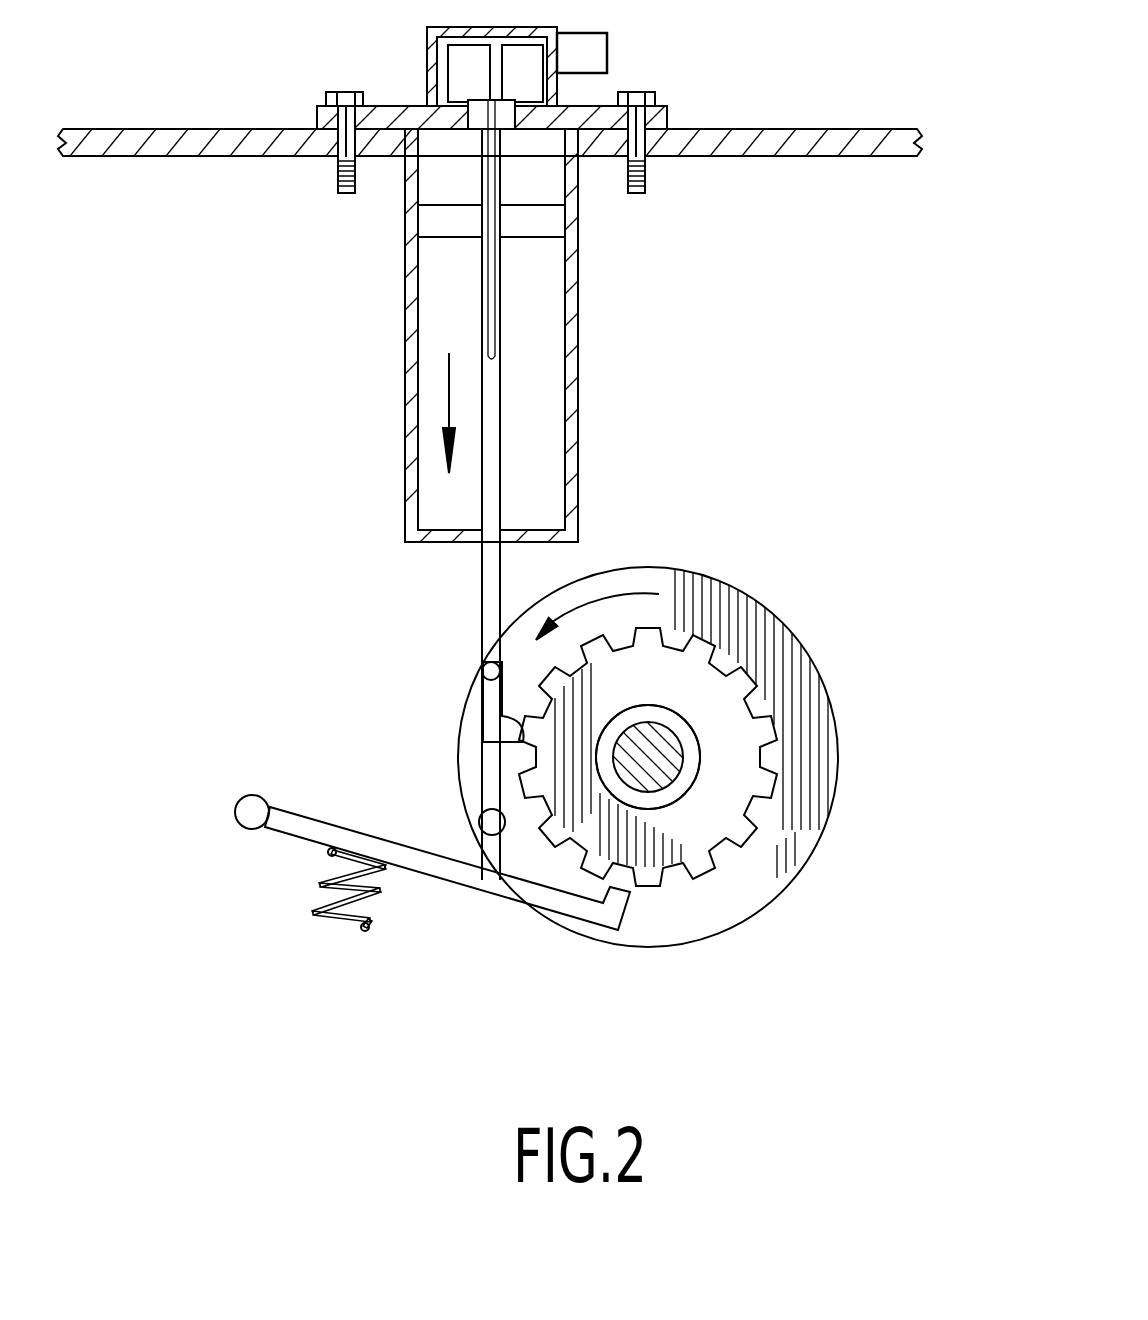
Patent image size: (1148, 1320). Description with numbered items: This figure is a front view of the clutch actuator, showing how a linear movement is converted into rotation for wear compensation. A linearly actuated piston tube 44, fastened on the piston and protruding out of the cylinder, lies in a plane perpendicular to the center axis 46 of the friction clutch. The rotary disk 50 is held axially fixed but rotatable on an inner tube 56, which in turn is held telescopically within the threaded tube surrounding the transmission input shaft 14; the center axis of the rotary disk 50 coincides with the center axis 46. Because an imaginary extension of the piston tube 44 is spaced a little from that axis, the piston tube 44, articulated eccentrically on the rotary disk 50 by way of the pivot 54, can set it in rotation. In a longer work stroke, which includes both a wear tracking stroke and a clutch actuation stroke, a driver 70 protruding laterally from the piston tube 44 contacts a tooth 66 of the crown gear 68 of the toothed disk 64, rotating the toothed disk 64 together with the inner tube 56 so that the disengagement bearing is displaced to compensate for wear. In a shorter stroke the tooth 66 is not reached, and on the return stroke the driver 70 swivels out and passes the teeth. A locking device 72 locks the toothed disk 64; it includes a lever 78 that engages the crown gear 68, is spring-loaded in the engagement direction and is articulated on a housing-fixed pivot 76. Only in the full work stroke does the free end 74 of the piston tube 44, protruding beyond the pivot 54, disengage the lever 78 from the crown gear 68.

The transmission input shaft 14 is at (696, 750).
The piston tube 44 is at (483, 580).
The center axis 46 is at (655, 762).
The rotary disk 50 is at (783, 647).
The pivot 54 is at (482, 822).
The inner tube 56 is at (640, 717).
The toothed disk 64 is at (763, 778).
The tooth 66 is at (478, 752).
The crown gear 68 is at (750, 857).
The driver 70 is at (492, 702).
The locking device 72 is at (357, 965).
The free end 74 is at (492, 860).
The pivot 76 is at (242, 812).
The lever 78 is at (302, 838).